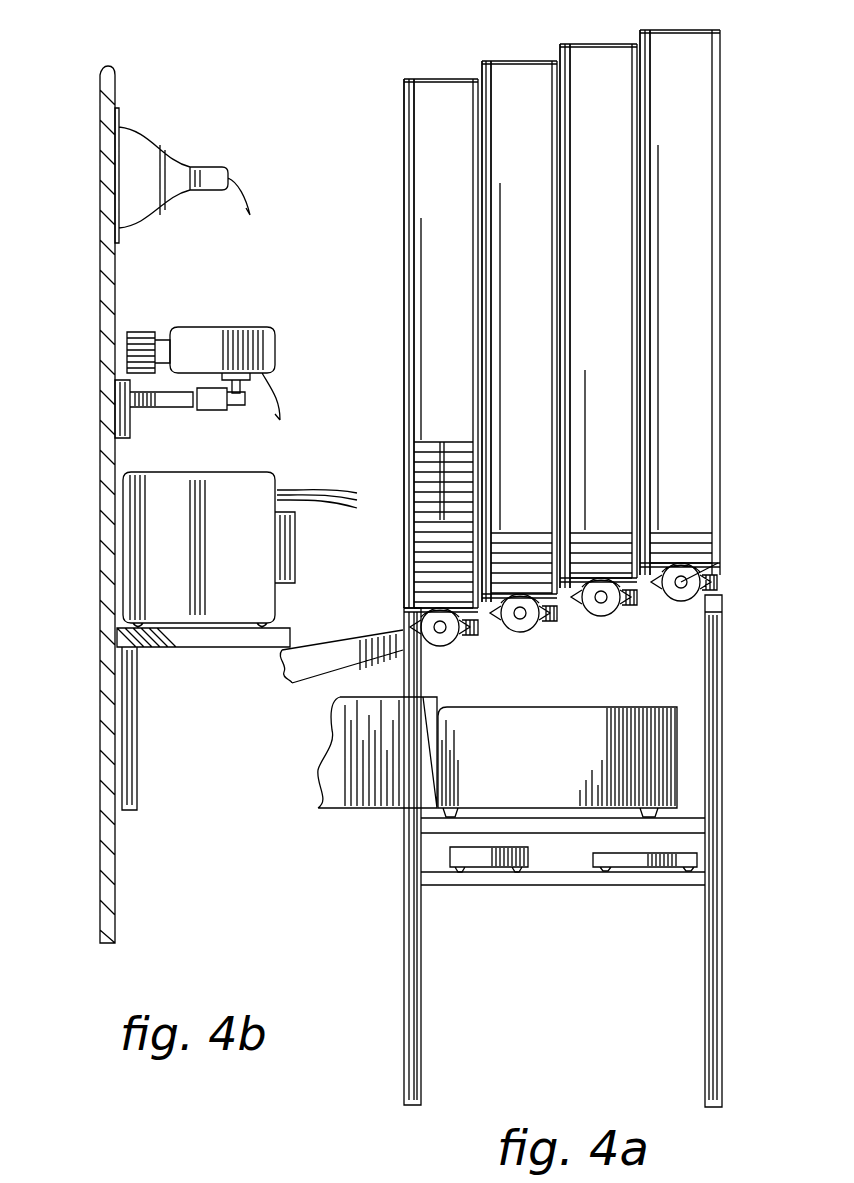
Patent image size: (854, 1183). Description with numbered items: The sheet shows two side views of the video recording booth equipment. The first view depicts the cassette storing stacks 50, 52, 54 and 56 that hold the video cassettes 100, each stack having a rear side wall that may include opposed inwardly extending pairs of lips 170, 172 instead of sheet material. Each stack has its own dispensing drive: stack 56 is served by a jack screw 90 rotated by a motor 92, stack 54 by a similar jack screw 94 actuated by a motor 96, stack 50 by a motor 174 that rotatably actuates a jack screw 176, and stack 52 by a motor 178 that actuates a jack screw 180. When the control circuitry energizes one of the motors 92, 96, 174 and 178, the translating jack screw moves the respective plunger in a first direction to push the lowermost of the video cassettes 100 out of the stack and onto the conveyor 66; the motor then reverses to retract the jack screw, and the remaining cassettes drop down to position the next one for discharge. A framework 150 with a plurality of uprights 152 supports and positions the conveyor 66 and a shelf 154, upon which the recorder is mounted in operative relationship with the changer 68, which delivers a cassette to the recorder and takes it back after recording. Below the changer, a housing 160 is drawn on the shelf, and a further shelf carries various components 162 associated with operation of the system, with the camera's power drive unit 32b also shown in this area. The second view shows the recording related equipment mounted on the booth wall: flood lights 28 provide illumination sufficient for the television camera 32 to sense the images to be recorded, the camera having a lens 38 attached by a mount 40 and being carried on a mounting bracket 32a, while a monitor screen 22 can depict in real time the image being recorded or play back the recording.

In FIG. 4A, the stack 50 is at (692, 30).
In FIG. 4A, the stack 52 is at (612, 44).
In FIG. 4A, the stack 54 is at (512, 60).
In FIG. 4A, the stack 56 is at (438, 78).
In FIG. 4A, the lip 170 is at (412, 380).
In FIG. 4A, the lip 172 is at (470, 320).
In FIG. 4A, the video cassette 100 is at (450, 440).
In FIG. 4A, the jack screw 90 is at (435, 640).
In FIG. 4A, the motor 92 is at (455, 632).
In FIG. 4A, the jack screw 94 is at (535, 622).
In FIG. 4A, the motor 96 is at (518, 632).
In FIG. 4A, the motor 174 is at (675, 600).
In FIG. 4A, the jack screw 176 is at (718, 563).
In FIG. 4A, the motor 178 is at (612, 618).
In FIG. 4A, the jack screw 180 is at (595, 615).
In FIG. 4A, the collection bin 160 is at (630, 724).
In FIG. 4A, the component 162 is at (637, 864).
In FIG. 4A, the power drive unit 32b is at (478, 862).
In FIG. 4A, the framework 150 is at (733, 985).
In FIG. 4A, the upright 152 is at (722, 730).
In FIG. 4A, the shelf 154 is at (706, 886).
In FIG. 4A, the conveyor 66 is at (345, 650).
In FIG. 4A, the changer 68 is at (336, 775).
In FIG. 4B, the flood light 28 is at (147, 147).
In FIG. 4B, the lens 38 is at (138, 330).
In FIG. 4B, the television camera 32 is at (225, 325).
In FIG. 4B, the mounting bracket 32a is at (215, 410).
In FIG. 4B, the mount 40 is at (165, 390).
In FIG. 4B, the monitor screen 22 is at (125, 545).